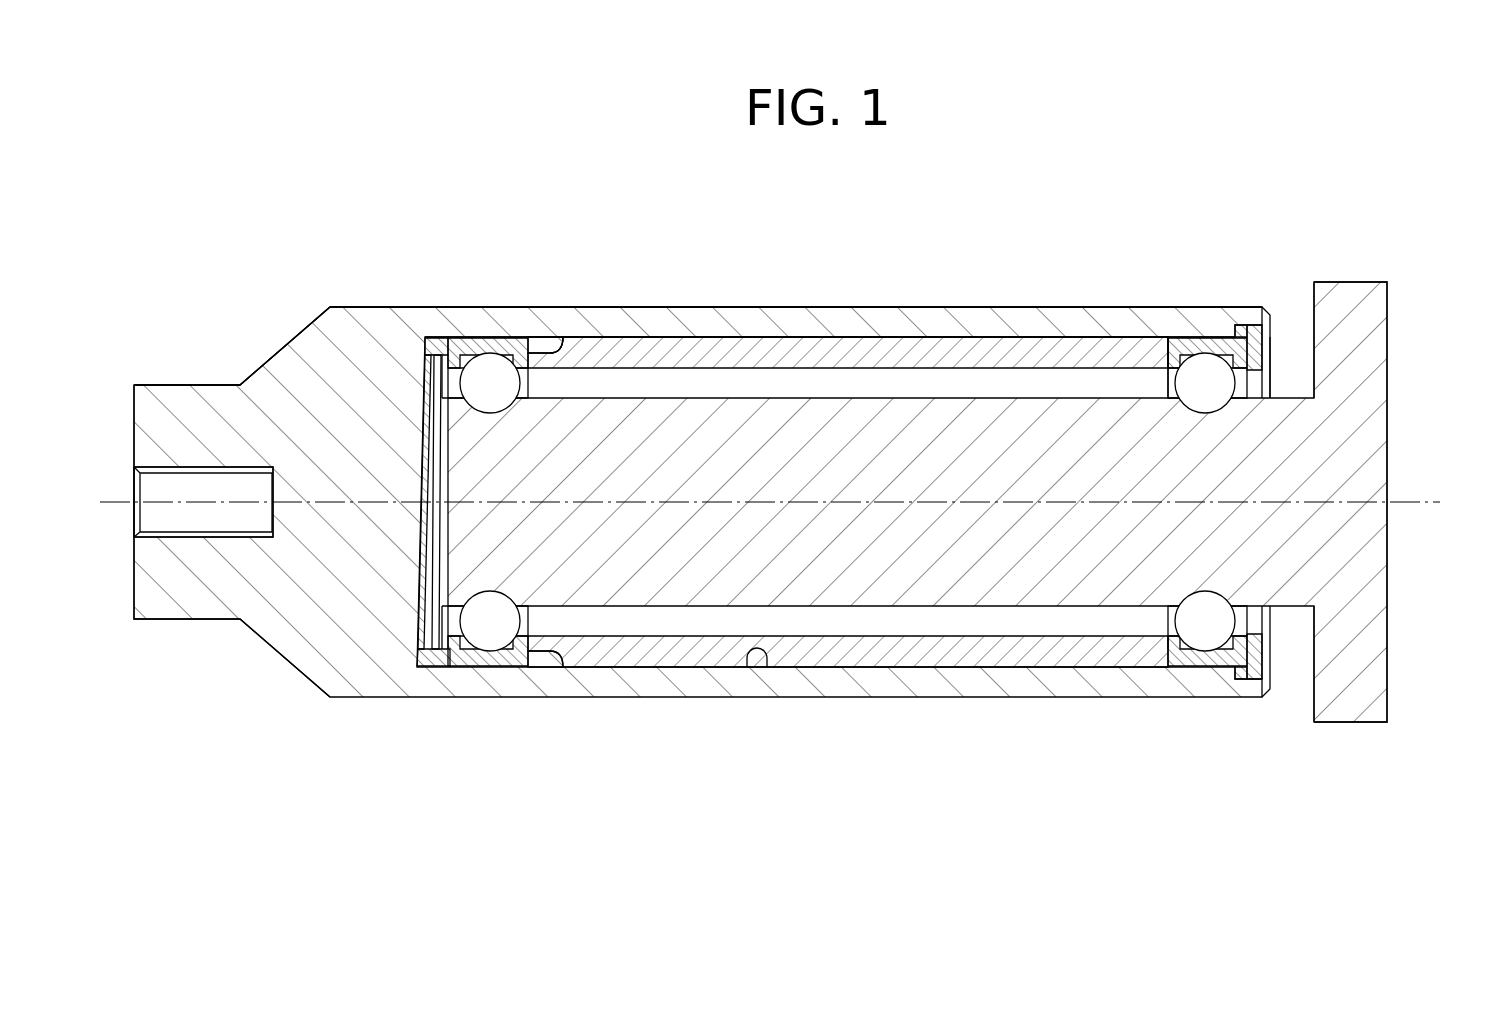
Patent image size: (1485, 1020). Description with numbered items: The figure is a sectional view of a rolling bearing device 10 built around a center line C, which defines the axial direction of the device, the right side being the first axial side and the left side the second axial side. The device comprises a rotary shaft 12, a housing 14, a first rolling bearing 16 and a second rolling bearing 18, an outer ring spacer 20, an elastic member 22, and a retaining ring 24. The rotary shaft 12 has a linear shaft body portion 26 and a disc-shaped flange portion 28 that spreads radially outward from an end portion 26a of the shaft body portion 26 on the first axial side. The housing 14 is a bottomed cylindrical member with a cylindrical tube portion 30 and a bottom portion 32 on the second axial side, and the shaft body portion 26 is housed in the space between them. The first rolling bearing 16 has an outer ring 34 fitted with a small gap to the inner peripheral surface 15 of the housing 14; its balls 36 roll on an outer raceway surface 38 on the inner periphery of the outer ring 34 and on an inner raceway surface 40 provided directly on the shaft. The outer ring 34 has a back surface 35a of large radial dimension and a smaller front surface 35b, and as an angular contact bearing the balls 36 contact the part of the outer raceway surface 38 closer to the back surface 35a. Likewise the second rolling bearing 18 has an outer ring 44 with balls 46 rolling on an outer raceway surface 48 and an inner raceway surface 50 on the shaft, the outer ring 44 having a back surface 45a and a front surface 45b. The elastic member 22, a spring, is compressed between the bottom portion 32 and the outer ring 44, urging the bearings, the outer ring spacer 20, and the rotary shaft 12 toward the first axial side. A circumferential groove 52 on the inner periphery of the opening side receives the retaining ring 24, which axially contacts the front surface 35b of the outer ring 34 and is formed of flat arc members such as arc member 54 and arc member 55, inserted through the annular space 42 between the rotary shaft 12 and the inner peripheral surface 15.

The rolling bearing device 10 is at (330, 307).
The rotary shaft 12 is at (800, 396).
The housing 14 is at (905, 306).
The inner peripheral surface 15 is at (747, 667).
The first rolling bearing 16 is at (1168, 337).
The second rolling bearing 18 is at (495, 324).
The outer ring spacer 20 is at (968, 325).
The elastic member 22 is at (423, 345).
The retaining ring 24 is at (1253, 325).
The shaft body portion 26 is at (960, 580).
The end portion 26a is at (1320, 476).
The flange portion 28 is at (1367, 688).
The tube portion 30 is at (725, 322).
The bottom portion 32 is at (288, 388).
The outer ring 34 is at (1198, 337).
The back surface 35a is at (1130, 337).
The front surface 35b is at (1280, 345).
The balls 36 is at (1217, 610).
The outer raceway surface 38 is at (1200, 637).
The inner raceway surface 40 is at (1195, 605).
The annular space 42 is at (1285, 380).
The outer ring 44 is at (490, 336).
The back surface 45a is at (562, 336).
The front surface 45b is at (442, 337).
The balls 46 is at (480, 613).
The outer raceway surface 48 is at (490, 643).
The inner raceway surface 50 is at (498, 613).
The circumferential groove 52 is at (1237, 682).
The arc member 54 is at (1275, 338).
The arc member 55 is at (1257, 684).
The center line C is at (1427, 505).